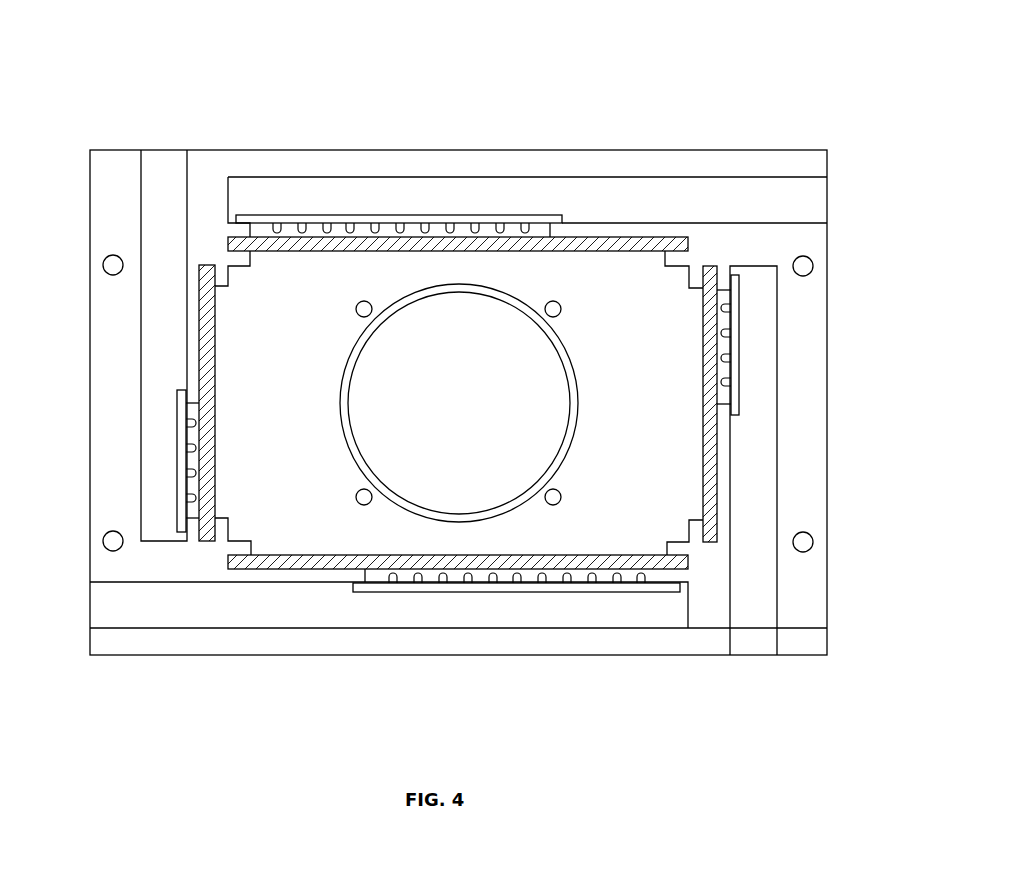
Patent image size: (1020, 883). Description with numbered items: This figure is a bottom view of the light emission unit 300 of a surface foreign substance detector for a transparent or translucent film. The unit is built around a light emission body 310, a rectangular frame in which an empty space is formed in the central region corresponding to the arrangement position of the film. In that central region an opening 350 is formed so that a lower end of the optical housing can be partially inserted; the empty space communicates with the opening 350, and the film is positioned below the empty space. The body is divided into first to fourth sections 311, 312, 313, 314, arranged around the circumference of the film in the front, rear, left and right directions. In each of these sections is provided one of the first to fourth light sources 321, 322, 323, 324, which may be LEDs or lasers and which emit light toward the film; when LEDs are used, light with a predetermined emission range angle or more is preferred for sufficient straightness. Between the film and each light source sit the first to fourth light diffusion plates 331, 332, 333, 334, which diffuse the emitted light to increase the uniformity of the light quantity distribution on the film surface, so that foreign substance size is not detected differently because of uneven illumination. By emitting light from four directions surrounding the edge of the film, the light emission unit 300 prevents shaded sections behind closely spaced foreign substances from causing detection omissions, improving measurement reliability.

The light emission unit 300 is at (742, 43).
The light emission body 310 is at (208, 160).
The first section 311 is at (155, 326).
The second section 312 is at (380, 612).
The third section 313 is at (756, 412).
The fourth section 314 is at (508, 197).
The first light source 321 is at (195, 473).
The second light source 322 is at (493, 582).
The third light source 323 is at (723, 328).
The fourth light source 324 is at (375, 226).
The first light diffusion plate 331 is at (210, 310).
The second light diffusion plate 332 is at (600, 560).
The third light diffusion plate 333 is at (708, 500).
The fourth light diffusion plate 334 is at (625, 245).
The opening 350 is at (394, 426).